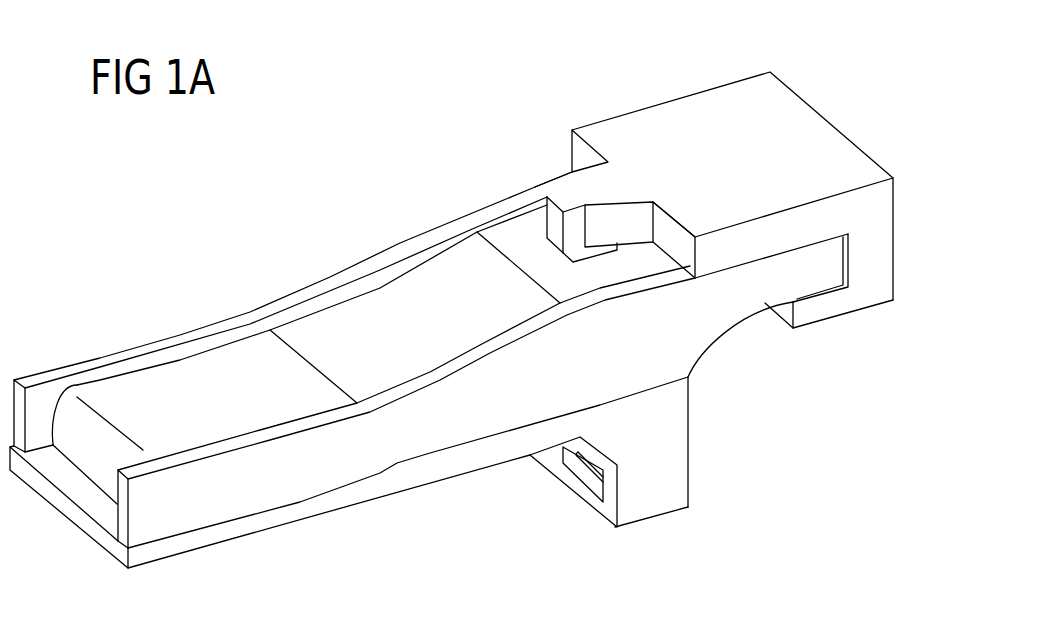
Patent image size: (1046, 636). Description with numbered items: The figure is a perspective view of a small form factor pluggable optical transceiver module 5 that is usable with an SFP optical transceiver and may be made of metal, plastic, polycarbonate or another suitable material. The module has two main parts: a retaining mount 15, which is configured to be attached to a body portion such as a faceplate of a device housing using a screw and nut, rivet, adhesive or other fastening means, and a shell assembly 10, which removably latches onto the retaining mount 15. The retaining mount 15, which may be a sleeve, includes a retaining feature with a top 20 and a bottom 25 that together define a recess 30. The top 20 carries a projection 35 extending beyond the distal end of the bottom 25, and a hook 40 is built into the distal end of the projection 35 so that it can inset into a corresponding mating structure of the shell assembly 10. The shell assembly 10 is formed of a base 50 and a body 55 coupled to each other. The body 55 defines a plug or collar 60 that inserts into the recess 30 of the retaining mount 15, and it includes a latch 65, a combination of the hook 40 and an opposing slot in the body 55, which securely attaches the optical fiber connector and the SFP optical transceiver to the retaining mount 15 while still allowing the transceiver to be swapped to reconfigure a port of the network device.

The SFP optical transceiver module 5 is at (290, 186).
The shell assembly 10 is at (706, 430).
The retaining mount 15 is at (707, 195).
The top 20 is at (695, 120).
The bottom 25 is at (843, 318).
The recess 30 is at (837, 260).
The projection 35 is at (567, 197).
The hook 40 is at (598, 260).
The base 50 is at (353, 507).
The body 55 is at (188, 507).
The collar 60 is at (752, 285).
The latch 65 is at (535, 156).